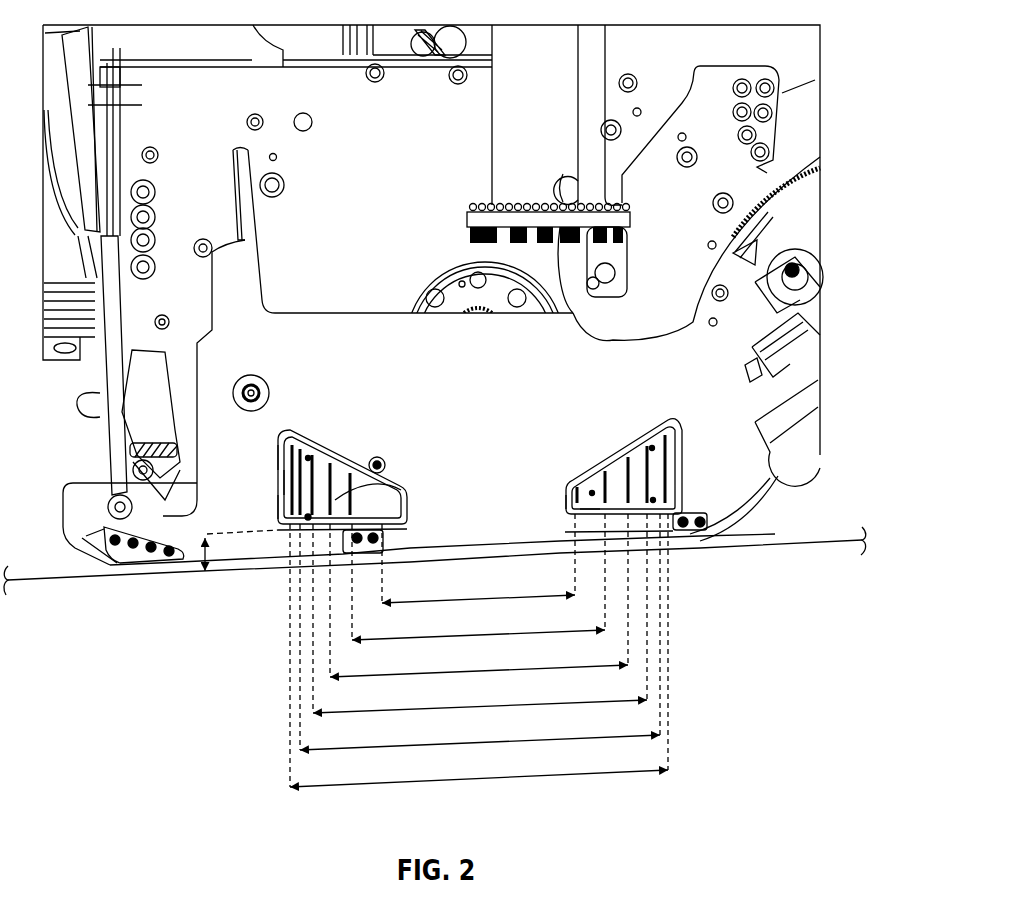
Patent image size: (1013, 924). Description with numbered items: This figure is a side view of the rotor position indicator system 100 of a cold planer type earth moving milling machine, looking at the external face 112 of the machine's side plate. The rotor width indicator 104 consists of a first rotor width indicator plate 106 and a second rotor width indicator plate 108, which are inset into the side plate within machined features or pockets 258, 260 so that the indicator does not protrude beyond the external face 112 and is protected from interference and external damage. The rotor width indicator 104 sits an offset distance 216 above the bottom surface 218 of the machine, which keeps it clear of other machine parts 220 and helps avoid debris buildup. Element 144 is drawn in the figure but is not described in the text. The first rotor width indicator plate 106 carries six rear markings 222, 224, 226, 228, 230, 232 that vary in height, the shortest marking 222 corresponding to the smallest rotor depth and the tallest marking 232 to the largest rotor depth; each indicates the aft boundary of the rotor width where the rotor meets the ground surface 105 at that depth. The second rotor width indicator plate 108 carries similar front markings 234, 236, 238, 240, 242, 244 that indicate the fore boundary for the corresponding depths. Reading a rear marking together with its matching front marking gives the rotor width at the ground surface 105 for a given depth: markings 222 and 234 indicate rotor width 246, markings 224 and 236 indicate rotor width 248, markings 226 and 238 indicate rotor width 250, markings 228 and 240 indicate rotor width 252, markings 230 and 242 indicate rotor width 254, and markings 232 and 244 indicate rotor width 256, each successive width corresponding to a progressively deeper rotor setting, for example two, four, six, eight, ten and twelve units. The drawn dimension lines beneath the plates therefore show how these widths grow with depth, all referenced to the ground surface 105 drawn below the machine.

The rotor position indicator system 100 is at (833, 110).
The rotor width indicator 104 is at (672, 410).
The ground surface 105 is at (75, 576).
The first rotor width indicator plate 106 is at (278, 537).
The second rotor width indicator plate 108 is at (686, 538).
The external face of the side plate 112 is at (143, 313).
The motor drive housing 144 is at (814, 288).
The offset distance 216 is at (175, 573).
The bottom surface 218 is at (213, 580).
The other machine parts 220 is at (350, 553).
The marking 222 is at (400, 521).
The marking 224 is at (406, 488).
The marking 226 is at (386, 465).
The marking 228 is at (315, 472).
The marking 230 is at (279, 480).
The marking 232 is at (279, 446).
The marking 234 is at (573, 497).
The marking 236 is at (600, 493).
The marking 238 is at (627, 480).
The marking 240 is at (643, 452).
The marking 242 is at (677, 431).
The marking 244 is at (683, 472).
The rotor width 246 is at (462, 602).
The rotor width 248 is at (462, 638).
The rotor width 250 is at (462, 674).
The rotor width 252 is at (462, 710).
The rotor width 254 is at (462, 746).
The rotor width 256 is at (480, 785).
The machined feature (pocket) 258 is at (279, 487).
The machined feature (pocket) 260 is at (690, 490).